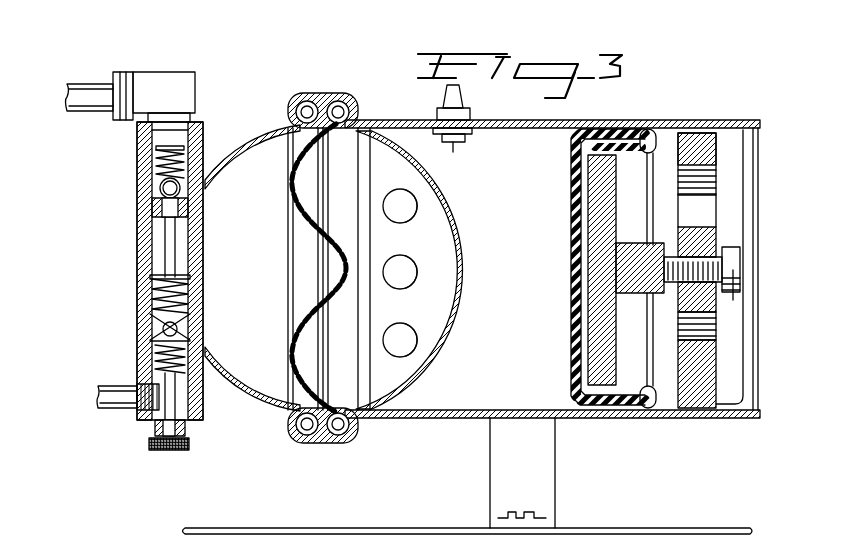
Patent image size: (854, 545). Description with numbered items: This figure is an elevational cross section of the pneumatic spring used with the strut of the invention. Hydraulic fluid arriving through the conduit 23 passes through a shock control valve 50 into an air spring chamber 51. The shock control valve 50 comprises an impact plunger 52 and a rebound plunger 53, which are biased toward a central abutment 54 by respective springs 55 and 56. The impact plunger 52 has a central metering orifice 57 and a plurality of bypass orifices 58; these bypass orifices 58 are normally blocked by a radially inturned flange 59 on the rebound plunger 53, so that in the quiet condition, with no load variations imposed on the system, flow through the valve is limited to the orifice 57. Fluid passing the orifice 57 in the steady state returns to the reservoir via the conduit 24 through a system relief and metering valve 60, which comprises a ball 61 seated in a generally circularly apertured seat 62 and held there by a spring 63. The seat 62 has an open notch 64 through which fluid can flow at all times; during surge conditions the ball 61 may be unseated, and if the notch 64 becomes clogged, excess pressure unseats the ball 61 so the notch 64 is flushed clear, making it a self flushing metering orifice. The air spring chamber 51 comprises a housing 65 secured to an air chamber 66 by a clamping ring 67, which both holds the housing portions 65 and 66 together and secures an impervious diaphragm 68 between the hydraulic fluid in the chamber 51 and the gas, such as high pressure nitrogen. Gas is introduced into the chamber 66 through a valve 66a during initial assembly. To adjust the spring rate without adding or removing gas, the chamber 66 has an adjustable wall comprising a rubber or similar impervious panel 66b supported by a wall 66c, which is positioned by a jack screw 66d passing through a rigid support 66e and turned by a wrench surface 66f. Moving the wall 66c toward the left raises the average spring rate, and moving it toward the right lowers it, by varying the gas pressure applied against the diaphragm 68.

The conduit 23 is at (110, 398).
The conduit 24 is at (88, 96).
The shock control valve 50 is at (140, 295).
The air spring chamber 51 is at (252, 162).
The impact plunger 52 is at (150, 318).
The rebound plunger 53 is at (155, 343).
The central abutment 54 is at (152, 334).
The spring 55 is at (165, 275).
The spring 56 is at (155, 362).
The central metering orifice 57 is at (160, 328).
The bypass orifices 58 is at (185, 325).
The radially inturned flange 59 is at (192, 328).
The system relief and metering valve 60 is at (135, 177).
The ball 61 is at (162, 190).
The seat 62 is at (162, 228).
The spring 63 is at (172, 148).
The notch 64 is at (203, 198).
The housing 65 is at (262, 134).
The air chamber 66 is at (457, 420).
The valve 66a is at (463, 137).
The impervious panel 66b is at (572, 300).
The wall 66c is at (588, 222).
The jack screw 66d is at (640, 263).
The rigid support 66e is at (700, 235).
The wrench surface 66f is at (732, 300).
The clamping ring 67 is at (318, 445).
The diaphragm 68 is at (322, 110).